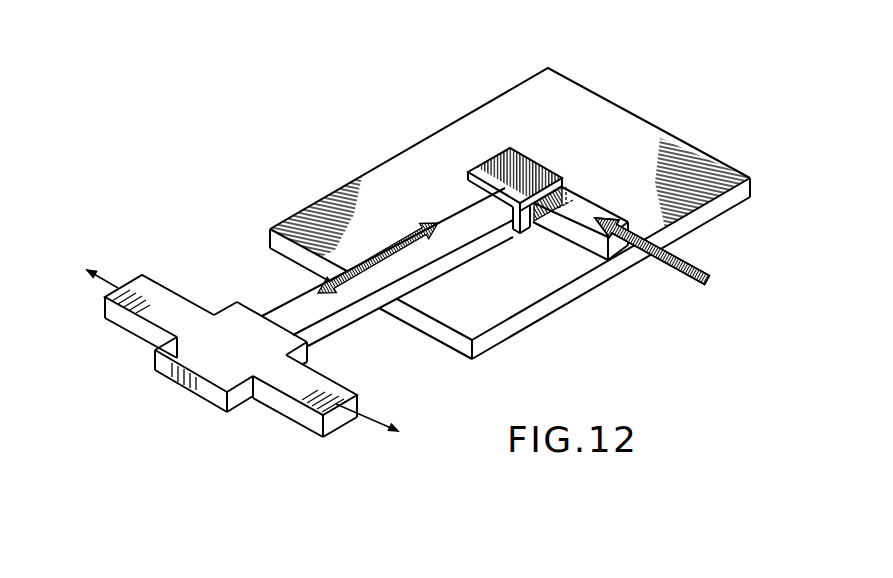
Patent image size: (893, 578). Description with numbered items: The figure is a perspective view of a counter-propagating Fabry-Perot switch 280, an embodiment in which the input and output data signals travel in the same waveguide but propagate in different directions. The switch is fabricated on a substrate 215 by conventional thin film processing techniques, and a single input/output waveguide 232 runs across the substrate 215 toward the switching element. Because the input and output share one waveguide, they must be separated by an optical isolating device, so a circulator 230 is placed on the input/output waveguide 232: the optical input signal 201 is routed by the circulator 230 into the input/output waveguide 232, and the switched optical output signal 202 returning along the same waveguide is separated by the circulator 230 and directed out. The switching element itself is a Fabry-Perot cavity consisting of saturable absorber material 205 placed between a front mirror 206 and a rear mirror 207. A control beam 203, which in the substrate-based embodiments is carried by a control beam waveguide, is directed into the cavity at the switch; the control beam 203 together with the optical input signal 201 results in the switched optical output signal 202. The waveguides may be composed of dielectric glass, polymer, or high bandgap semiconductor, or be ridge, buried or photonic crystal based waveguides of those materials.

The optical input signal 201 is at (371, 422).
The switched optical output signal 202 is at (168, 303).
The control beam 203 is at (714, 283).
The saturable absorber material 205 is at (507, 173).
The front mirror 206 is at (473, 170).
The rear mirror 207 is at (550, 150).
The substrate 215 is at (680, 178).
The circulator 230 is at (223, 373).
The input/output waveguide 232 is at (458, 222).
The counter-propagating Fabry-Perot switch 280 is at (703, 108).